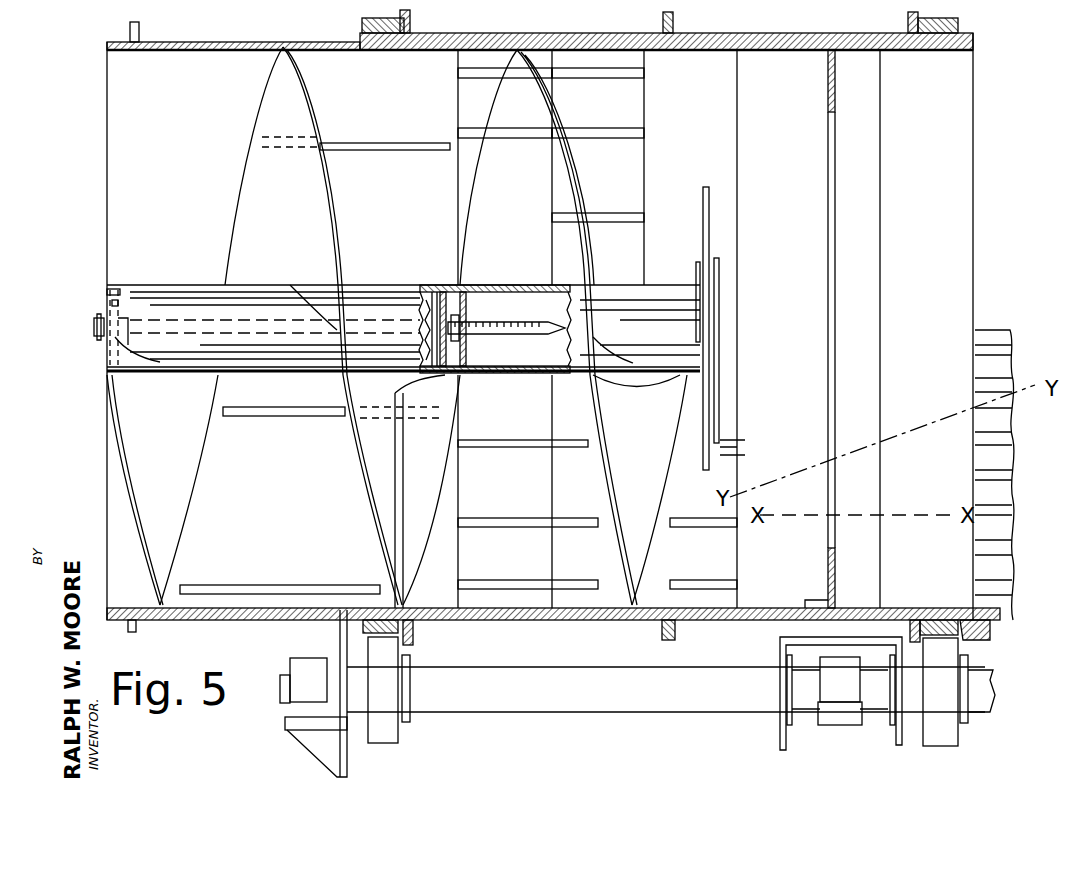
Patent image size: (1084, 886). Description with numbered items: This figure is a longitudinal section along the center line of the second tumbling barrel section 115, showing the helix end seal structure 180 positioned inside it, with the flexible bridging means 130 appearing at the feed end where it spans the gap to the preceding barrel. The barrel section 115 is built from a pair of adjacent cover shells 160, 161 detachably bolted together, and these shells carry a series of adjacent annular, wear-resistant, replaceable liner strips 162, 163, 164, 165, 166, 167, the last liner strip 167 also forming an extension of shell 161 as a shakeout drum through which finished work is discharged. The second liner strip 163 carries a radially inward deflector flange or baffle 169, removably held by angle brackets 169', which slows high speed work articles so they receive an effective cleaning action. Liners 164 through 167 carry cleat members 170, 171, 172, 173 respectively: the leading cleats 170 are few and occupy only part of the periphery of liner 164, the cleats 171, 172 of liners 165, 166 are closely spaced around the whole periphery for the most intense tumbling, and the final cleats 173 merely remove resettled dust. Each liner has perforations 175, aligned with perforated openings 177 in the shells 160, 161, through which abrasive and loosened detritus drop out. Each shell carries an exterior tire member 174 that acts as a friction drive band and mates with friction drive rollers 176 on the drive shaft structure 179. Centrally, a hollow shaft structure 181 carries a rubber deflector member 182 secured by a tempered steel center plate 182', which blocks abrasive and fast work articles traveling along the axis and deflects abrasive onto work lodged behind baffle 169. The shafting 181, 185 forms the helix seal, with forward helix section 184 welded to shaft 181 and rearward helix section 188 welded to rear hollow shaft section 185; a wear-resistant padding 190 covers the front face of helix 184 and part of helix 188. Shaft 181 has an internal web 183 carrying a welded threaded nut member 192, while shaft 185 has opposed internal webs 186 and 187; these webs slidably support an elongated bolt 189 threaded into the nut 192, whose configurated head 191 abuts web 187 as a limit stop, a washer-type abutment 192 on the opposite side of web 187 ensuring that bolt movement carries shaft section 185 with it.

The barrel section 115 is at (982, 161).
The flexible bridging means 130 is at (1008, 432).
The cover shell 160 is at (805, 33).
The cover shell 161 is at (540, 33).
The liner strip 162 is at (950, 284).
The liner strip 163 is at (795, 324).
The liner strip 164 is at (708, 129).
The liner strip 165 is at (593, 113).
The liner strip 166 is at (465, 87).
The liner strip 167 is at (115, 117).
The deflector flange 169 is at (795, 329).
The angle brackets 169' is at (789, 586).
The cleat members 170 is at (730, 448).
The cleat members 171 is at (607, 203).
The cleat members 172 is at (480, 436).
The cleat members 173 is at (337, 142).
The tire member 174 is at (355, 625).
The perforations 175 is at (296, 608).
The friction drive rollers 176 is at (395, 745).
The perforated openings 177 is at (505, 615).
The shaft structure 179 is at (612, 700).
The end seal structure 180 is at (205, 235).
The hollow shaft structure 181 is at (680, 330).
The deflector member 182 is at (746, 350).
The center plate 182' is at (753, 328).
The internal web 183 is at (462, 352).
The helix section 184 is at (560, 198).
The rear hollow shaft section 185 is at (248, 302).
The internal web section 186 is at (432, 290).
The internal web member 187 is at (107, 292).
The helix section 188 is at (322, 170).
The bolt 189 is at (525, 330).
The wear-resistant padding 190 is at (568, 165).
The configurated head 191 is at (98, 336).
The threaded nut member 192 is at (110, 318).